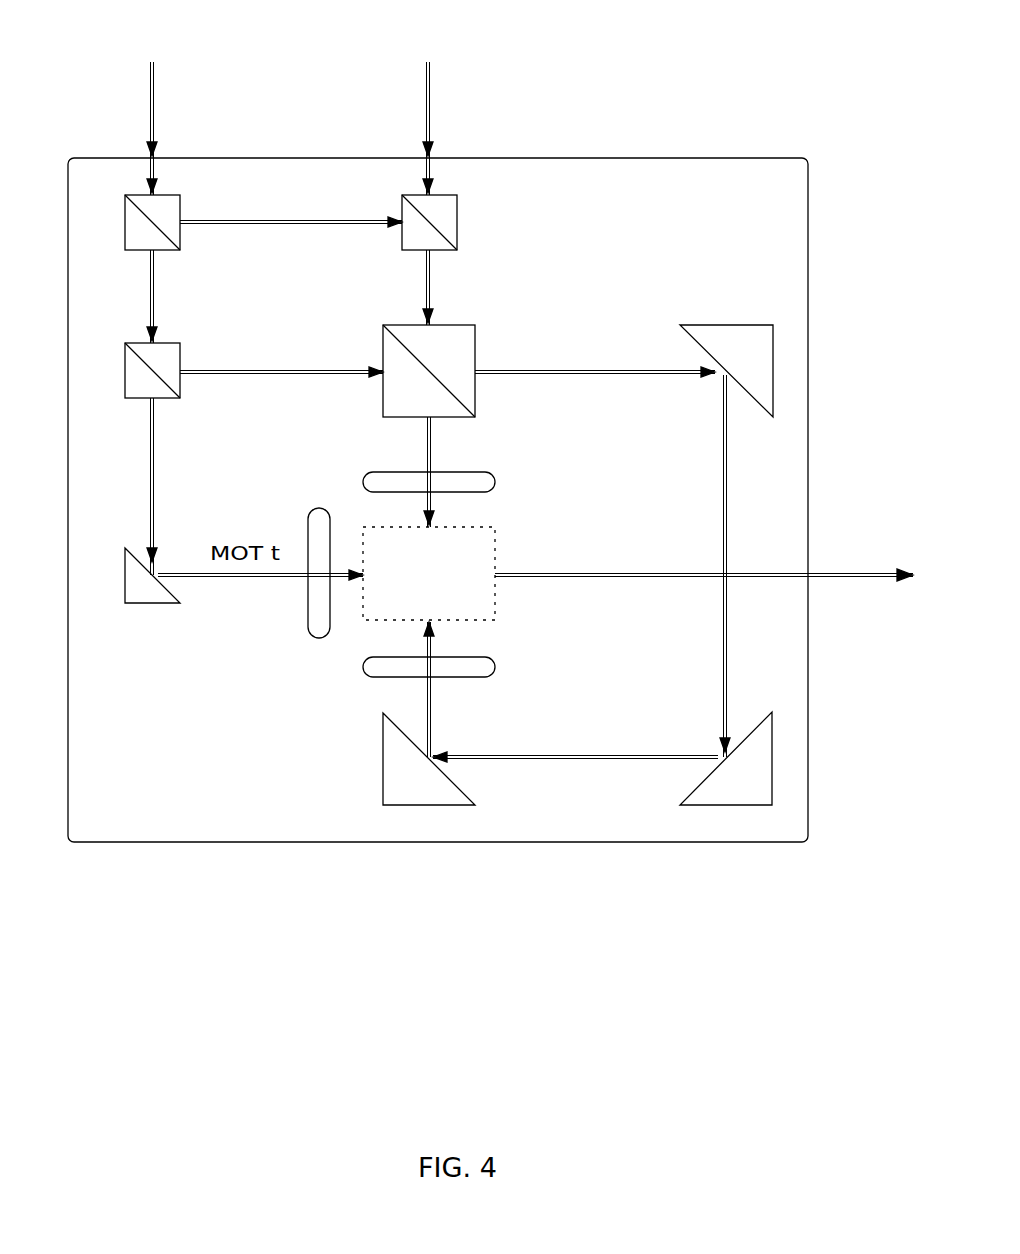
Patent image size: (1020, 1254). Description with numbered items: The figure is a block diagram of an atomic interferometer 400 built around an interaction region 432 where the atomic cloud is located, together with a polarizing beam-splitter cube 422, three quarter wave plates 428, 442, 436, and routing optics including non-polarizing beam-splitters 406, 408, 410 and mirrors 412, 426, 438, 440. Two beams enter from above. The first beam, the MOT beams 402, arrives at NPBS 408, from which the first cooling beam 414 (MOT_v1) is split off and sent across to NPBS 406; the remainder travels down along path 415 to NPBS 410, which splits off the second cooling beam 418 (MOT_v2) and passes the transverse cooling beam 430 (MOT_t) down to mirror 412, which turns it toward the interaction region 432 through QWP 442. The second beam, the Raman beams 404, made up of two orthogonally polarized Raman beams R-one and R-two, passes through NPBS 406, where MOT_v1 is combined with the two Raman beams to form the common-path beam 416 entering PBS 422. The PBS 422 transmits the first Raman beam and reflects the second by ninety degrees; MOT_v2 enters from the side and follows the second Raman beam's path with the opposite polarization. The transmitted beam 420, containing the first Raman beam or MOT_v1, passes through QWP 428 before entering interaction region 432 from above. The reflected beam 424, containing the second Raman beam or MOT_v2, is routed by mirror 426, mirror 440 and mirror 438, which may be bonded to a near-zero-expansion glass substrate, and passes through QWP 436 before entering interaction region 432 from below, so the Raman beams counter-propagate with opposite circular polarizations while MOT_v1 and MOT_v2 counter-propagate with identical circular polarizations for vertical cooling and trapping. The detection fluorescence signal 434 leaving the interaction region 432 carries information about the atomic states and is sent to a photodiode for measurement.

The atomic interferometer 400 is at (479, 479).
The beam 1: MOT beams 402 is at (166, 109).
The beam 2: Raman beams 404 is at (442, 109).
The non-polarizing beam-splitter 406 is at (476, 222).
The non-polarizing beam-splitter 408 is at (94, 232).
The non-polarizing beam-splitter 410 is at (94, 378).
The mirror 412 is at (94, 584).
The first cooling beam 414 is at (287, 239).
The beam path 415 is at (117, 296).
The beam 416 is at (469, 287).
The second cooling beam 418 is at (277, 387).
The beam 420 is at (447, 472).
The polarizing beam-splitter cube 422 is at (483, 372).
The beam 424 is at (595, 393).
The mirror 426 is at (733, 340).
The quarter wave plate 428 is at (442, 489).
The transverse cooling beam 430 is at (117, 486).
The interaction region 432 is at (468, 599).
The detection fluorescence signal 434 is at (708, 577).
The quarter wave plate 436 is at (410, 692).
The mirror 438 is at (371, 765).
The mirror 440 is at (681, 774).
The quarter wave plate 442 is at (274, 598).